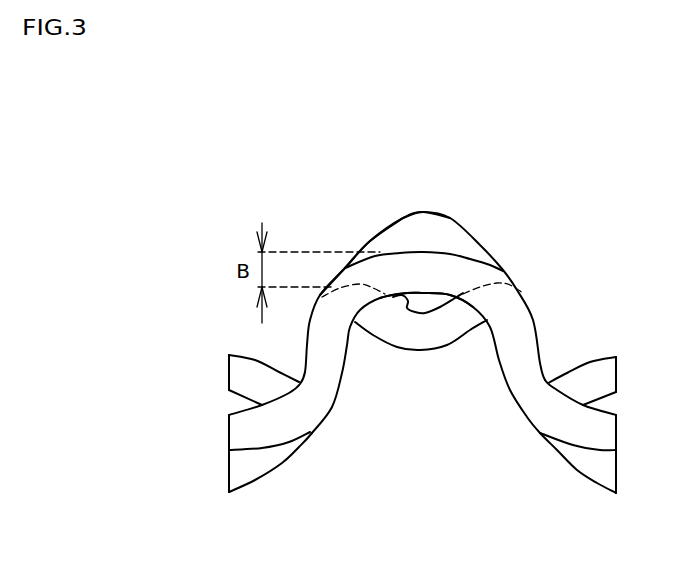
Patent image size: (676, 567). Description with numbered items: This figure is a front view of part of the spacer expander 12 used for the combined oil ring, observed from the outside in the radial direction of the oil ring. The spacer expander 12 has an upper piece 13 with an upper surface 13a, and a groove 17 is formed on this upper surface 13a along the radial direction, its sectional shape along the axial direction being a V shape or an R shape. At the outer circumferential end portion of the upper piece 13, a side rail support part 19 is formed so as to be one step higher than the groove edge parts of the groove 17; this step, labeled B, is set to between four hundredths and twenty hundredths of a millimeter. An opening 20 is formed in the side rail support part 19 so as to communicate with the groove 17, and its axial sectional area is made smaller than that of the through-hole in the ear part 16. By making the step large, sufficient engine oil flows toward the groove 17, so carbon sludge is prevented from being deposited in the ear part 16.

The spacer expander 12 is at (556, 228).
The upper piece 13 is at (467, 267).
The upper surface 13a is at (421, 253).
The ear part 16 is at (435, 221).
The groove 17 is at (392, 299).
The side rail support part 19 is at (373, 257).
The opening 20 is at (423, 300).